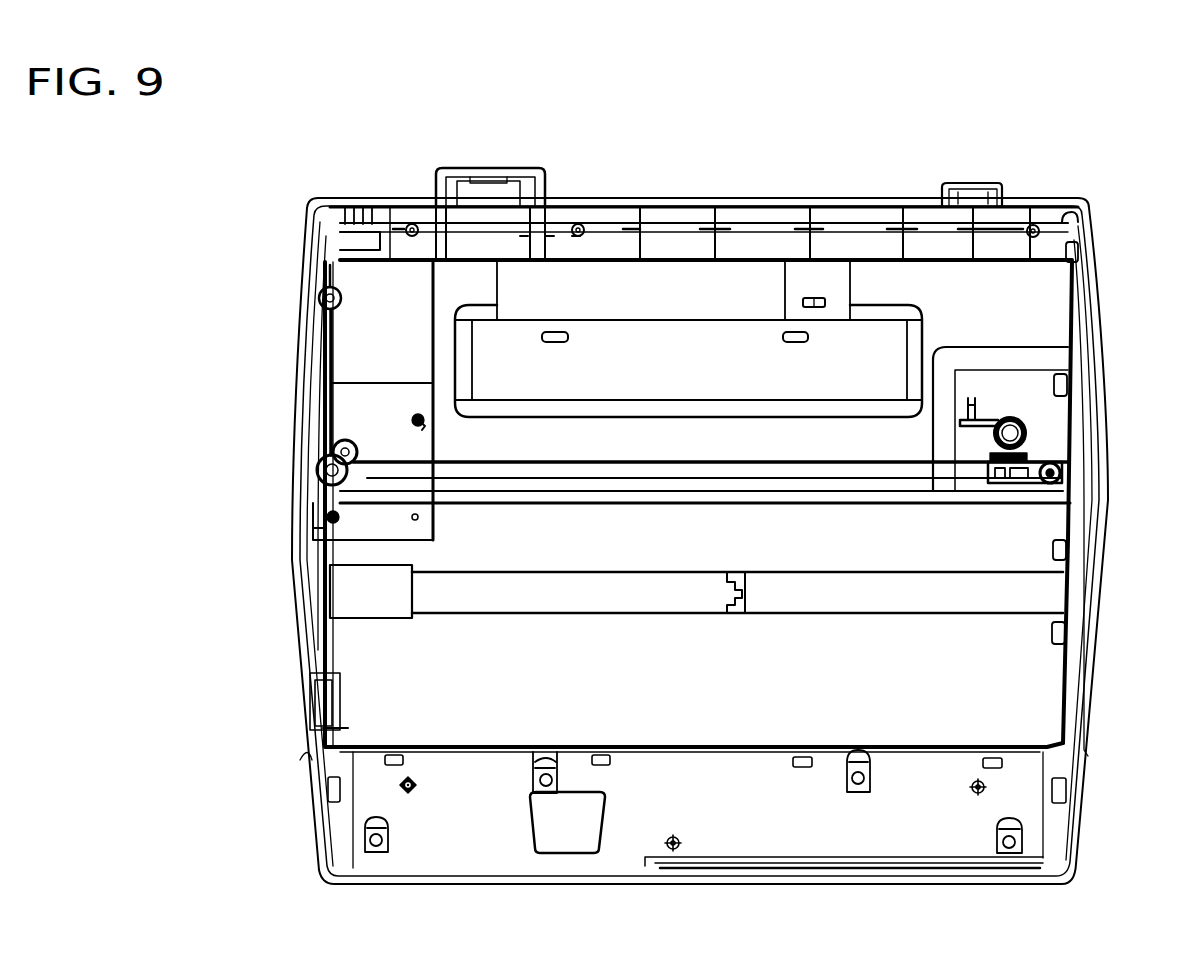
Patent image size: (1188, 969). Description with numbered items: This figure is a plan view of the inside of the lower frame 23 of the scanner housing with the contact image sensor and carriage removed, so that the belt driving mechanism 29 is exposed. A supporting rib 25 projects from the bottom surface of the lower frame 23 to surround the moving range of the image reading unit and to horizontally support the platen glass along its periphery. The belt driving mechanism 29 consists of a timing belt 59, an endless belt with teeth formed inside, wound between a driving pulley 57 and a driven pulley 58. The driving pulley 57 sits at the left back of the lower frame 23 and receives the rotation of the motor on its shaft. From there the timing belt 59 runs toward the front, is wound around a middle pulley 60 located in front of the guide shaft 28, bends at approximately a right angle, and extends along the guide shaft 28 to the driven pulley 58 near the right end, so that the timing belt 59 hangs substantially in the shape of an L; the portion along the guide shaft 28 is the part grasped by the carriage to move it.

The lower frame 23 is at (310, 812).
The supporting rib 25 is at (1073, 522).
The guide shaft 28 is at (652, 507).
The belt driving mechanism 29 is at (1042, 432).
The driving pulley 57 is at (342, 294).
The driven pulley 58 is at (1043, 485).
The timing belt 59 is at (603, 461).
The middle pulley 60 is at (350, 438).